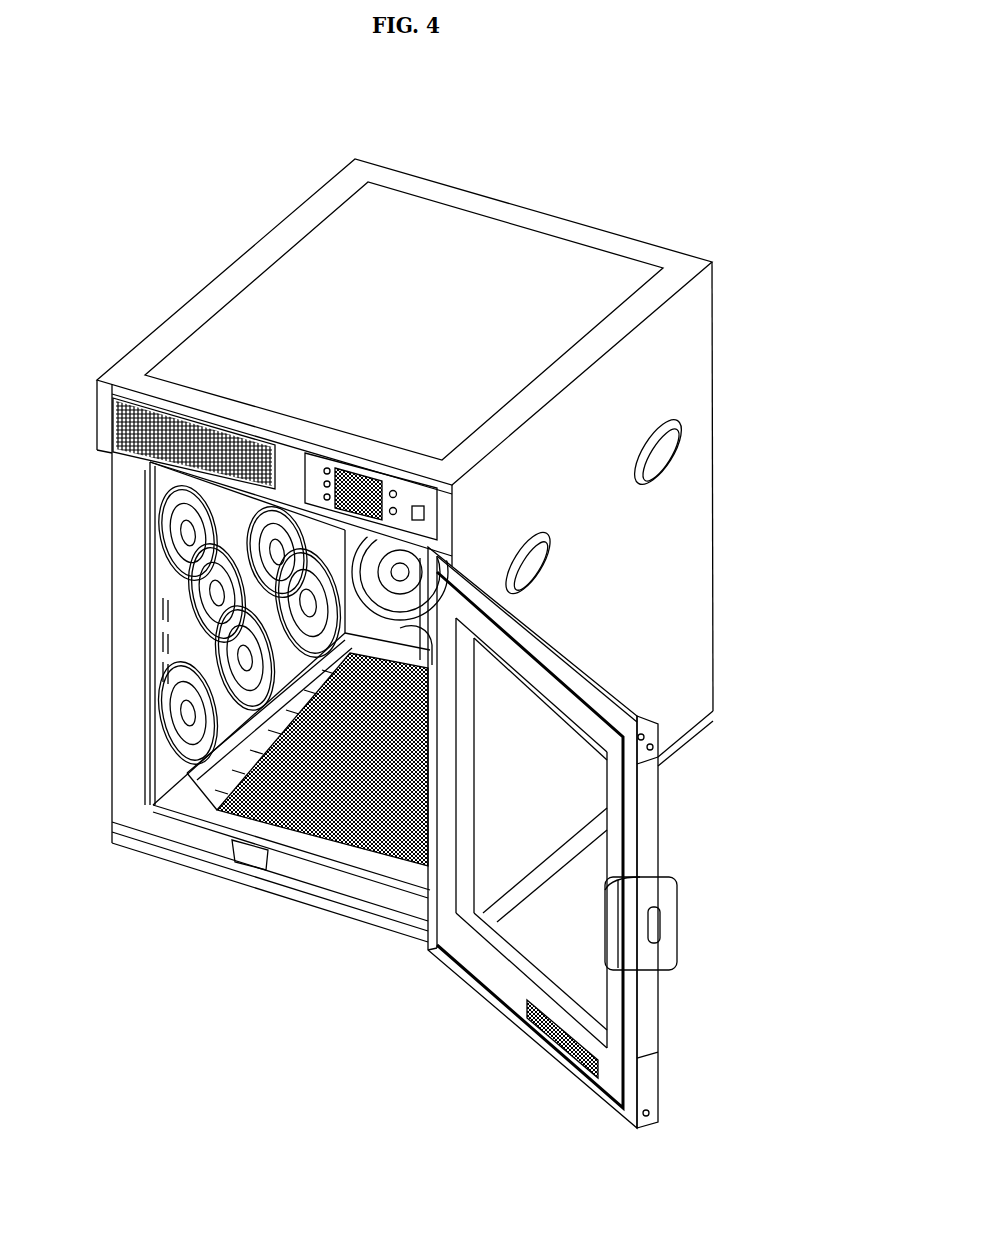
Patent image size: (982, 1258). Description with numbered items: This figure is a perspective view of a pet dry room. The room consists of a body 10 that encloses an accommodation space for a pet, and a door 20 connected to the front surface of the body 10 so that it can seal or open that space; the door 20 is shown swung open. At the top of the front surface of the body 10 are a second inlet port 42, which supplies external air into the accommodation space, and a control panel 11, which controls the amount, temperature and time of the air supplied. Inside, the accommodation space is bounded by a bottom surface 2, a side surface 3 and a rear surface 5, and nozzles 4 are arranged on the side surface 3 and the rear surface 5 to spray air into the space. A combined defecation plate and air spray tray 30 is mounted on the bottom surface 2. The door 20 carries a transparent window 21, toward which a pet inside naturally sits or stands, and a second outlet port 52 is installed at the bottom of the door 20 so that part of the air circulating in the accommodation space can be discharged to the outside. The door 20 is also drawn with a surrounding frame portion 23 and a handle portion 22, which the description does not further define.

The body 10 is at (467, 310).
The bottom surface 2 is at (125, 847).
The second inlet port 42 is at (197, 432).
The control panel 11 is at (388, 460).
The nozzles 4 is at (170, 575).
The side surface 3 is at (160, 635).
The rear surface 5 is at (377, 626).
The combined defecation plate and air spray tray 30 is at (232, 848).
The door 20 is at (664, 830).
The door frame 23 is at (565, 653).
The transparent window 21 is at (568, 928).
The handle 22 is at (683, 898).
The second outlet port 52 is at (538, 1012).